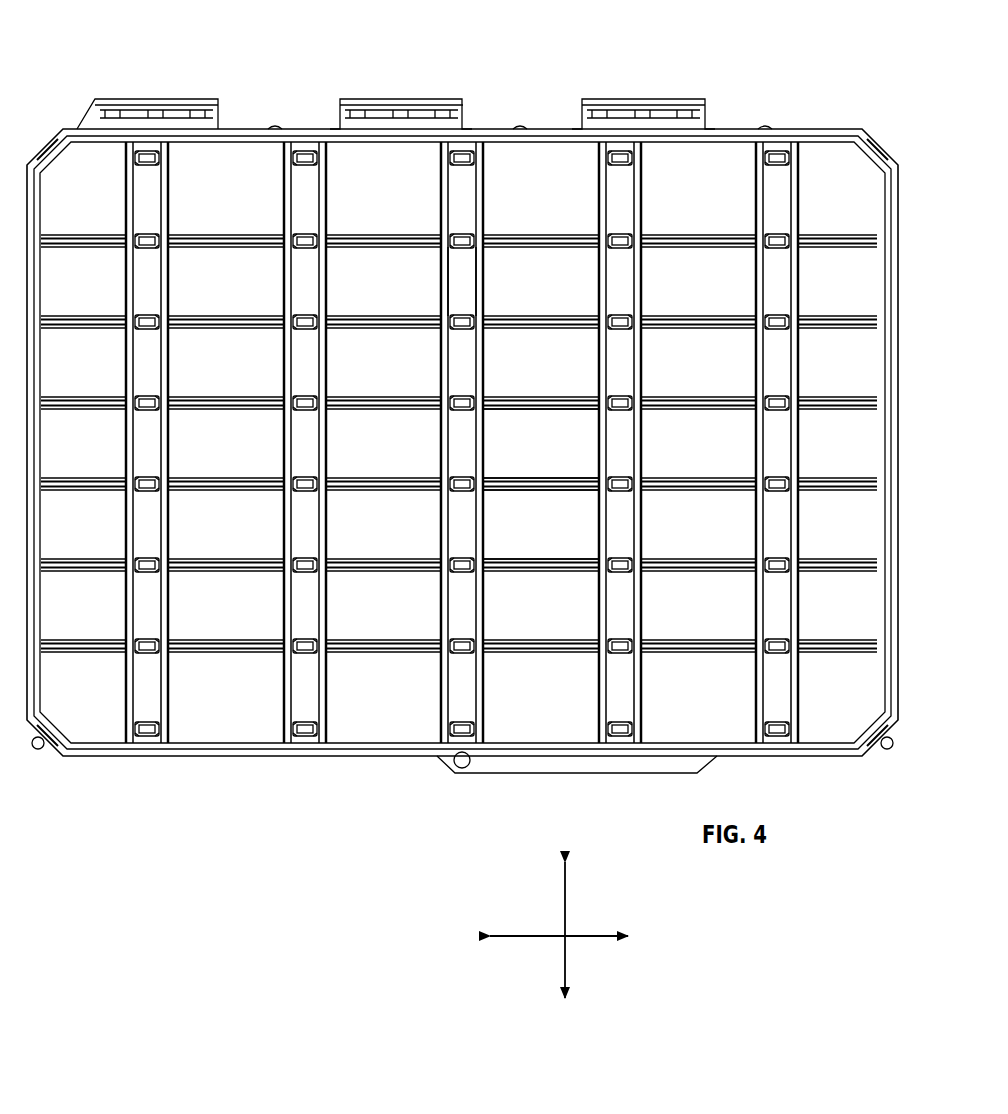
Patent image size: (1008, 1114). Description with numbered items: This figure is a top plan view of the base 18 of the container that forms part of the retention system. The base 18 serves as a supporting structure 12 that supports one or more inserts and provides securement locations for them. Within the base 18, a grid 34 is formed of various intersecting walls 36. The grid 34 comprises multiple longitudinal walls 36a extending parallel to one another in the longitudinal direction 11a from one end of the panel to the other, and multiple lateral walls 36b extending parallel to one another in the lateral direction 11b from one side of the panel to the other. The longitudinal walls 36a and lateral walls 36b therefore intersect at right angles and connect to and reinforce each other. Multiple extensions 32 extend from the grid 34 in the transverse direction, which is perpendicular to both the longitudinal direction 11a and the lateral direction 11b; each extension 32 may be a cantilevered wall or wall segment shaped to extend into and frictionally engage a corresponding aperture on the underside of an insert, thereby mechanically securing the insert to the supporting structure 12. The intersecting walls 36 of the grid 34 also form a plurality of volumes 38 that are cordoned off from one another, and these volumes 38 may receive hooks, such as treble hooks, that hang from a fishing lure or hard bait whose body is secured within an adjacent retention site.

The base 18 is at (748, 113).
The grid 34 is at (83, 175).
The supporting structure 12 is at (777, 220).
The walls 36 is at (348, 236).
The longitudinal walls 36a is at (350, 317).
The lateral walls 36b is at (480, 280).
The volumes 38 is at (542, 458).
The extensions 32 is at (300, 645).
The longitudinal direction 11a is at (532, 938).
The lateral direction 11b is at (566, 904).